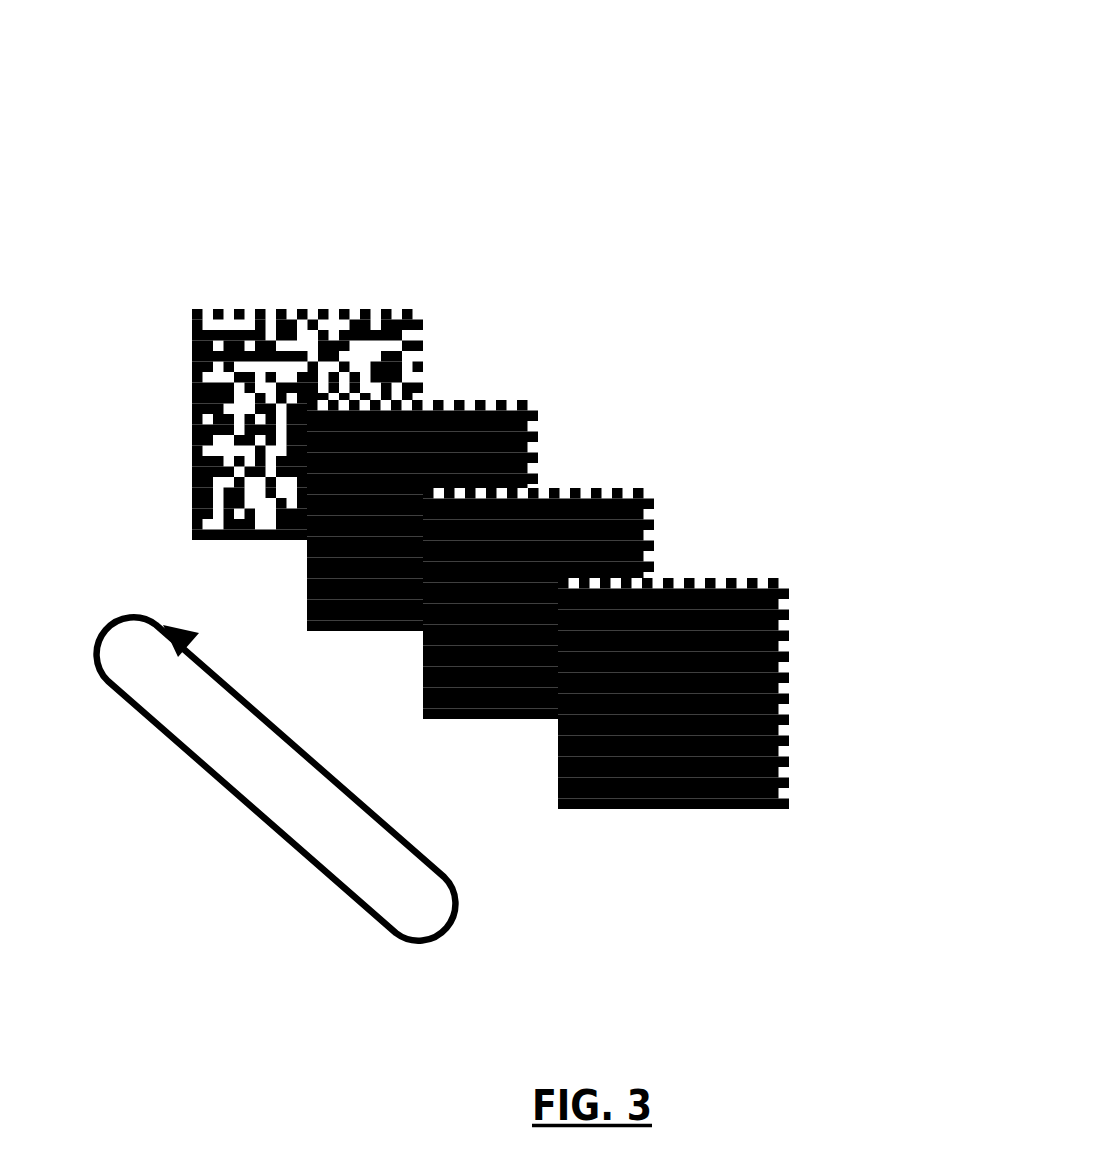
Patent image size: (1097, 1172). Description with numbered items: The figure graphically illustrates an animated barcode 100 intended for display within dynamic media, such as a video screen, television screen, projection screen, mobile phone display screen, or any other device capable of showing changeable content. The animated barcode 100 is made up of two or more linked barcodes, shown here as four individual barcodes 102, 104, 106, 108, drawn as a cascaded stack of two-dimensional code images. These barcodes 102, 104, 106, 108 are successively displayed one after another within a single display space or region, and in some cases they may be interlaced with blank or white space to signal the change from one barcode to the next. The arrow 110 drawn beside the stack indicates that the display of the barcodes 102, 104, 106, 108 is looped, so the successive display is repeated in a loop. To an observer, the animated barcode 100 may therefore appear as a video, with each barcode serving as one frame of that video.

The animated barcode 100 is at (717, 167).
The barcode 102 is at (633, 807).
The barcode 104 is at (628, 488).
The barcode 106 is at (535, 402).
The barcode 108 is at (192, 358).
The arrow 110 is at (248, 808).